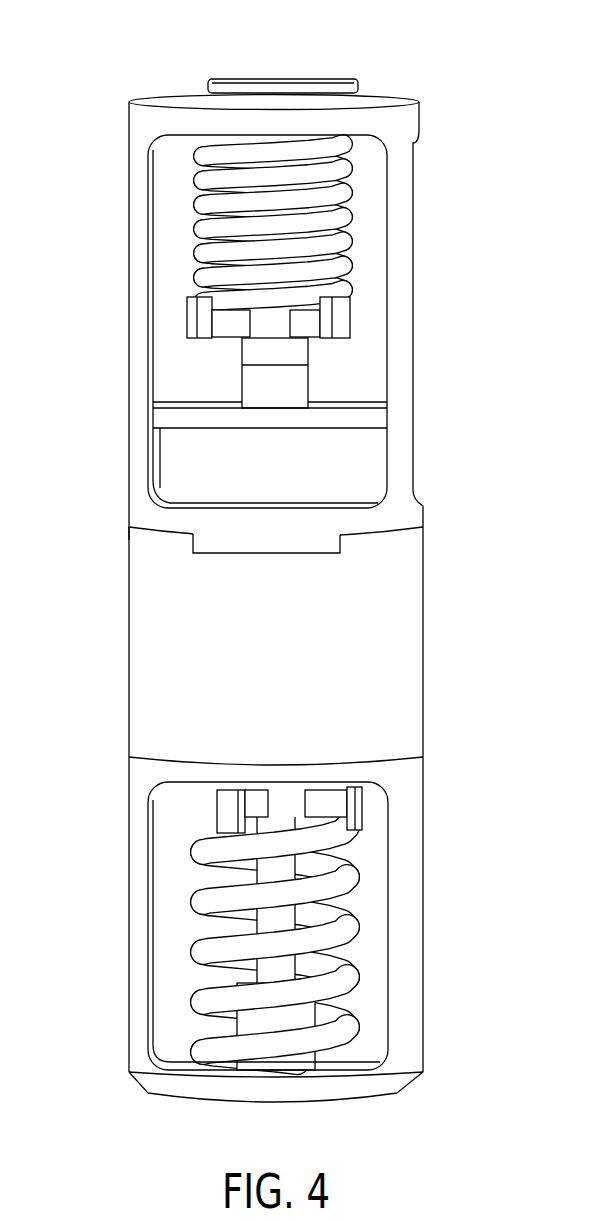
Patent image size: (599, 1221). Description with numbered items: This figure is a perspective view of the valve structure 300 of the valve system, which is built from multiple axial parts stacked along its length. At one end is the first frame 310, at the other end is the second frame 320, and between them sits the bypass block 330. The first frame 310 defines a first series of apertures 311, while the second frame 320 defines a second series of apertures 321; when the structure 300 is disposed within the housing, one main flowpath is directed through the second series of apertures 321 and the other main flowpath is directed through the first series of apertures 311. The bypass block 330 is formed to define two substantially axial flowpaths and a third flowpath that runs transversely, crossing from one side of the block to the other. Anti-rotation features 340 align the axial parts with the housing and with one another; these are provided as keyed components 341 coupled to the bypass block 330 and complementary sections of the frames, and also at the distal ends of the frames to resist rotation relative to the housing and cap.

The structure 300 is at (129, 183).
The first frame 310 is at (400, 184).
The first series of apertures 311 is at (386, 305).
The keyed components 341 is at (283, 84).
The anti-rotation features 340 is at (128, 525).
The bypass block 330 is at (407, 618).
The second frame 320 is at (407, 929).
The second series of apertures 321 is at (150, 925).